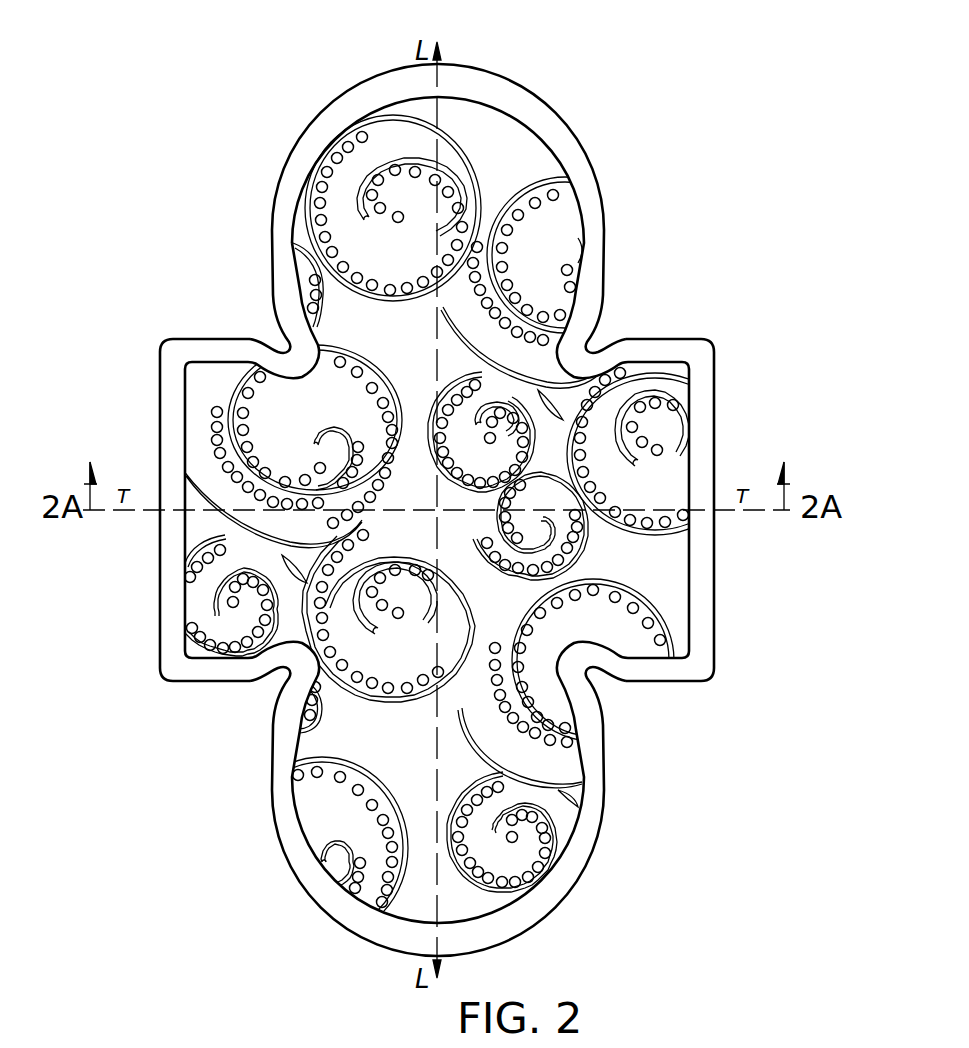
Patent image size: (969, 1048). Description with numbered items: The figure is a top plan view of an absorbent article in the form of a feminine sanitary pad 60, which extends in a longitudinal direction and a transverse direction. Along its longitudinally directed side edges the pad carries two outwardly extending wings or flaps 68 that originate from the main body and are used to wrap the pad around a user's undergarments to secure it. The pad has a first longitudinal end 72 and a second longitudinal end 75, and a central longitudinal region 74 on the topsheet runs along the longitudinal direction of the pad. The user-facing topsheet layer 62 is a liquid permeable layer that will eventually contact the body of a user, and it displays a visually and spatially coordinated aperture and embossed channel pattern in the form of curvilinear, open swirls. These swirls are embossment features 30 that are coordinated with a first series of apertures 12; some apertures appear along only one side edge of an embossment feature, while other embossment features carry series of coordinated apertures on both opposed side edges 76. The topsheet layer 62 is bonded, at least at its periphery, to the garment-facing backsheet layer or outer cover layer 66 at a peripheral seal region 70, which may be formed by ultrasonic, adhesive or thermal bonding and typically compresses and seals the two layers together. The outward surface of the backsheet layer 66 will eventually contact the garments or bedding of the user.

The first series of apertures 12 is at (330, 147).
The embossment features 30 is at (235, 385).
The feminine sanitary pad 60 is at (571, 80).
The topsheet layer 62 is at (557, 170).
The backsheet layer 66 is at (582, 252).
The wings 68 is at (708, 604).
The peripheral seal region 70 is at (597, 193).
The first longitudinal end 72 is at (414, 97).
The central longitudinal region 74 is at (447, 900).
The second longitudinal end 75 is at (396, 912).
The opposed side edges 76 is at (217, 453).